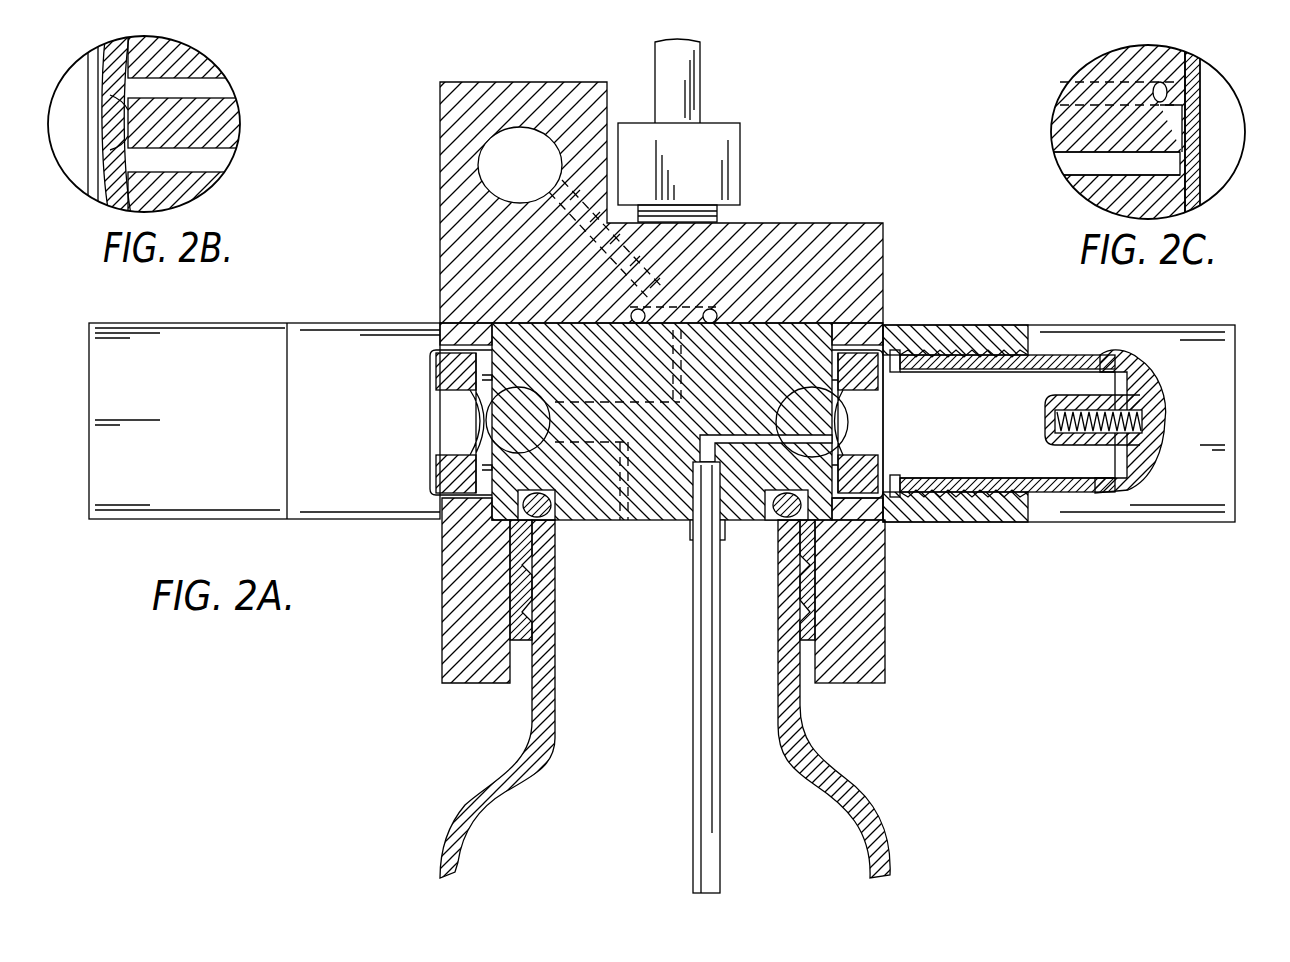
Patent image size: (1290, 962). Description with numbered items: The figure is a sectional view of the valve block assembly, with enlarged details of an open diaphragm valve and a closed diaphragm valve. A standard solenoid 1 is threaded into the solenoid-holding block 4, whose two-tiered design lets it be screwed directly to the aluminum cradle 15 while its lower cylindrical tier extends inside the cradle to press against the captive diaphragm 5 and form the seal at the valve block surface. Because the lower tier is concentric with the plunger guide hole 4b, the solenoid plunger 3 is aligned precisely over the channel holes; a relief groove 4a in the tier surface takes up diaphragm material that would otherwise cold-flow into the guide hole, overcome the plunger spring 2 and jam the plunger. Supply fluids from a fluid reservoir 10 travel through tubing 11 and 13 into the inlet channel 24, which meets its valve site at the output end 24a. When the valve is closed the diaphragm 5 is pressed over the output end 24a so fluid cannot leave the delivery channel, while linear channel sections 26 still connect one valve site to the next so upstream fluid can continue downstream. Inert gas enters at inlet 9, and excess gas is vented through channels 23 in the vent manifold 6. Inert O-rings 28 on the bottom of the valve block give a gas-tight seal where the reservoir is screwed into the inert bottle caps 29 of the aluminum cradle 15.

In FIG. 2A, the solenoid 1 is at (1238, 416).
In FIG. 2A, the plunger spring 2 is at (1098, 440).
In FIG. 2A, the solenoid plunger 3 is at (1052, 468).
In FIG. 2A, the solenoid-holding block 4 is at (1010, 527).
In FIG. 2A, the relief groove 4a is at (851, 380).
In FIG. 2A, the plunger guide hole 4b is at (438, 467).
In FIG. 2C, the diaphragm 5 is at (1216, 110).
In FIG. 2A, the vent manifold 6 is at (440, 162).
In FIG. 2A, the inlet 9 is at (755, 145).
In FIG. 2A, the fluid reservoir 10 is at (870, 802).
In FIG. 2A, the tubing 11 is at (730, 677).
In FIG. 2A, the tubing 13 is at (720, 834).
In FIG. 2A, the aluminum cradle 15 is at (838, 686).
In FIG. 2A, the vent channel 23 is at (618, 425).
In FIG. 2A, the inlet channel 24 is at (737, 447).
In FIG. 2A, the output end 24a is at (847, 438).
In FIG. 2C, the linear channel section 26 is at (1056, 120).
In FIG. 2A, the O-ring 28 is at (779, 520).
In FIG. 2A, the inert bottle cap 29 is at (818, 612).